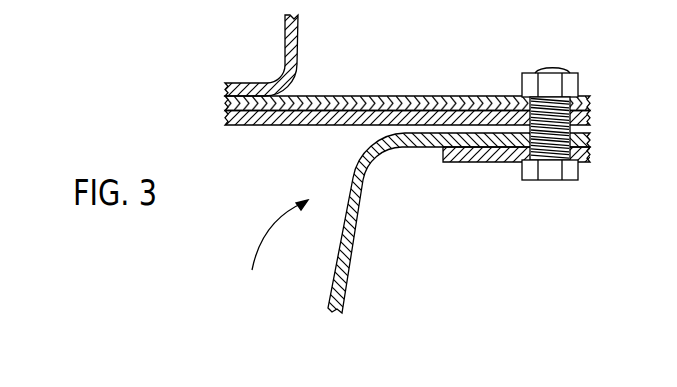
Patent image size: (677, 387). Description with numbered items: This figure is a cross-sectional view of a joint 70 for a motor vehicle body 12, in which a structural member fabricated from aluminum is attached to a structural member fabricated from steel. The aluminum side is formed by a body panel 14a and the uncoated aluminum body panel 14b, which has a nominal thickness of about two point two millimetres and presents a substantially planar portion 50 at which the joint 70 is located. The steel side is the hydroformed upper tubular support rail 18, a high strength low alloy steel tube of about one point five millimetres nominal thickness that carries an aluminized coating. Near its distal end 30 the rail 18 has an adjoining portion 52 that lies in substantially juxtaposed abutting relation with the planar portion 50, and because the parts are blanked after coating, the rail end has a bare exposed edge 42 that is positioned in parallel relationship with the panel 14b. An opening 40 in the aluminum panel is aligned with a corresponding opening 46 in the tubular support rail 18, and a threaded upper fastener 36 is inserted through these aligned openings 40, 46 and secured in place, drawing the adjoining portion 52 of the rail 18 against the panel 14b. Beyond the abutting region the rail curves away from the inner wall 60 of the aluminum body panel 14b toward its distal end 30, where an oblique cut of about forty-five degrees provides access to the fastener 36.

The motor vehicle body 12 is at (285, 115).
The first panel 14a is at (407, 101).
The uncoated aluminum body panel 14b is at (353, 220).
The upper tubular support rail 18 is at (587, 138).
The distal end 30 is at (478, 152).
The upper fastener 36 is at (555, 173).
The opening 40 is at (563, 163).
The bare exposed edge 42 is at (513, 229).
The opening 46 is at (557, 127).
The planar portion 50 is at (459, 117).
The adjoining portion 52 is at (508, 155).
The inner wall 60 is at (428, 122).
The joint 70 is at (269, 249).